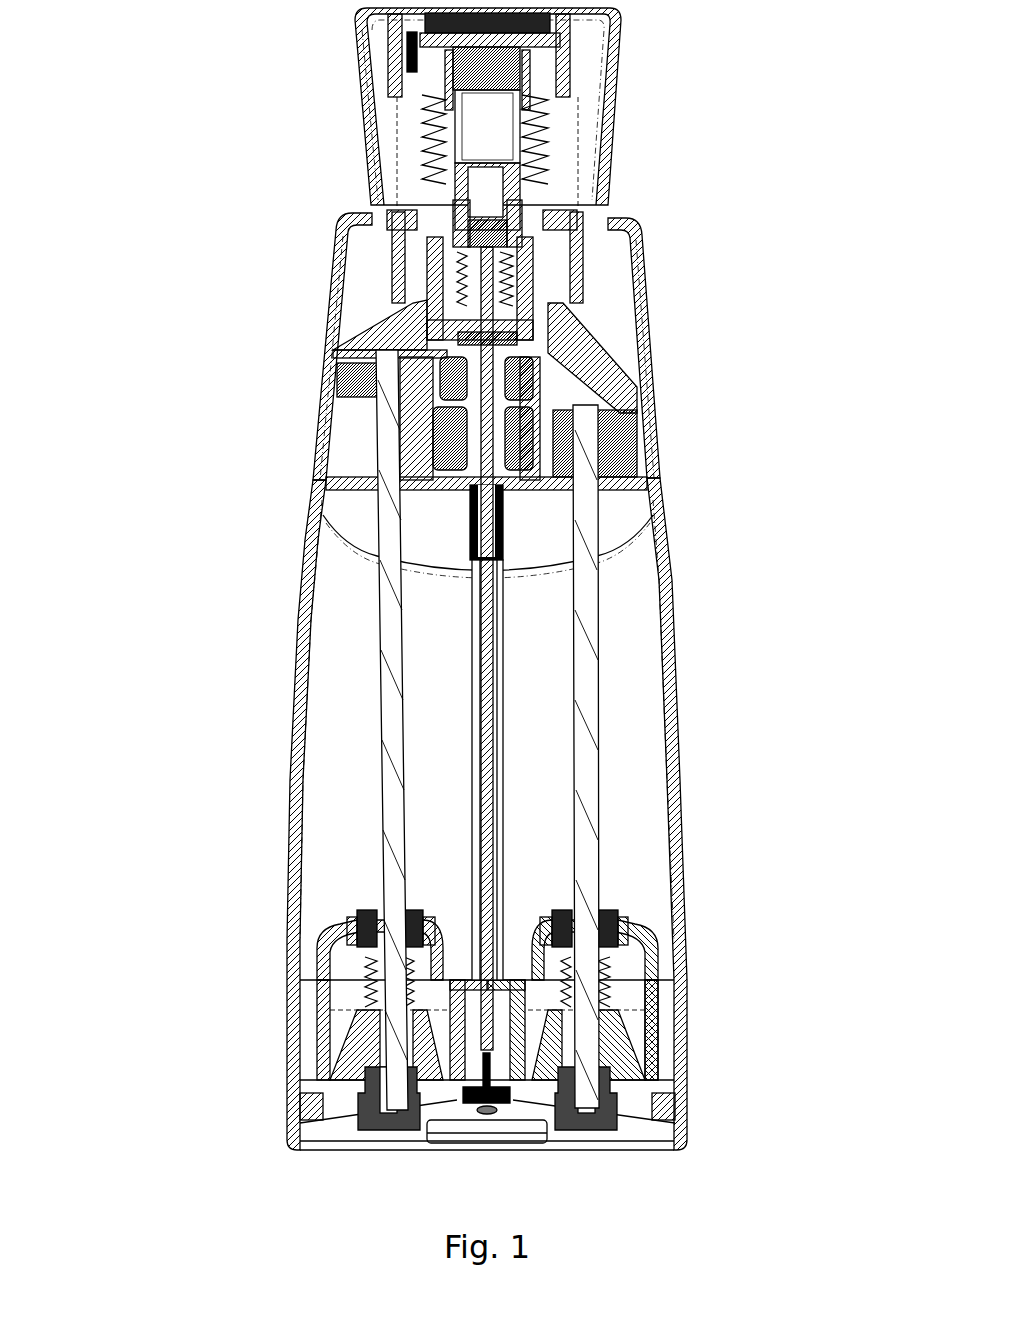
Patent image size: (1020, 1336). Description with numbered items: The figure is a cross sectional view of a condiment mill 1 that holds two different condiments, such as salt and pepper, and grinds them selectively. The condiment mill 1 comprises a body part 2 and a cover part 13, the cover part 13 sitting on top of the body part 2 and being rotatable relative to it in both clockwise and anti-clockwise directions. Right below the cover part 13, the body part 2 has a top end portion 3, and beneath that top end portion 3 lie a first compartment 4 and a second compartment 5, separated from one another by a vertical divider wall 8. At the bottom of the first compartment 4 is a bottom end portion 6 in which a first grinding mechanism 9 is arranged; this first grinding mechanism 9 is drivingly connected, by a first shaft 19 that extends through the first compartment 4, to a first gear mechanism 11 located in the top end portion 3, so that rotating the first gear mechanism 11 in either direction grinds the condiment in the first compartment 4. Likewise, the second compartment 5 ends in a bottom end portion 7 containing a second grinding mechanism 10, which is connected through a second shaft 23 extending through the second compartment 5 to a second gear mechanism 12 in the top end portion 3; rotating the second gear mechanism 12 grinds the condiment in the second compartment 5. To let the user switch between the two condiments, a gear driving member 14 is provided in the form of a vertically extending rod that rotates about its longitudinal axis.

The condiment mill 1 is at (462, 594).
The body part 2 is at (303, 620).
The top end portion 3 is at (313, 475).
The first compartment 4 is at (327, 835).
The second compartment 5 is at (630, 780).
The bottom end portion 6 is at (290, 1100).
The bottom end portion 7 is at (683, 1097).
The vertical divider wall 8 is at (485, 713).
The first grinding mechanism 9 is at (345, 1025).
The second grinding mechanism 10 is at (625, 1045).
The first gear mechanism 11 is at (327, 380).
The second gear mechanism 12 is at (613, 441).
The cover part 13 is at (617, 108).
The gear driving member 14 is at (493, 333).
The first shaft 19 is at (385, 720).
The second shaft 23 is at (577, 828).